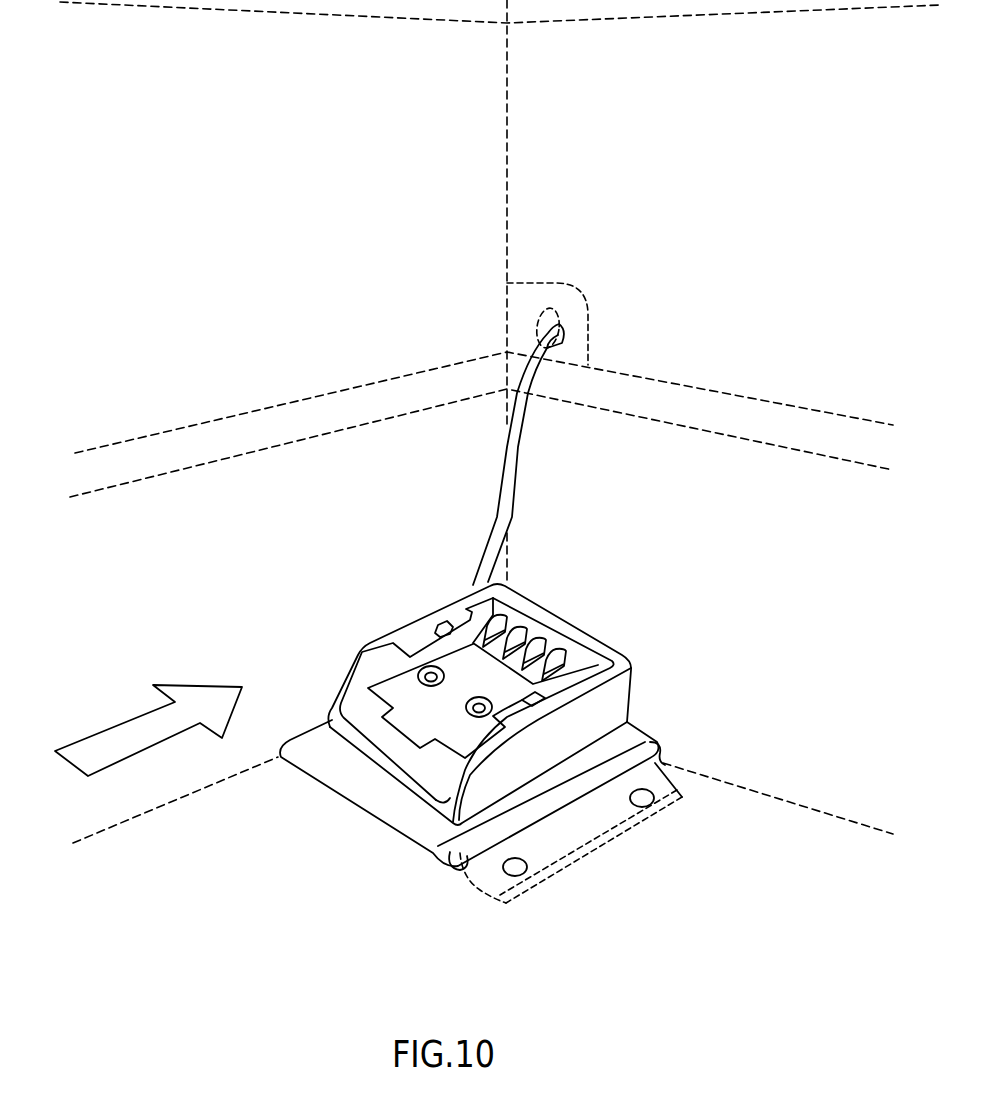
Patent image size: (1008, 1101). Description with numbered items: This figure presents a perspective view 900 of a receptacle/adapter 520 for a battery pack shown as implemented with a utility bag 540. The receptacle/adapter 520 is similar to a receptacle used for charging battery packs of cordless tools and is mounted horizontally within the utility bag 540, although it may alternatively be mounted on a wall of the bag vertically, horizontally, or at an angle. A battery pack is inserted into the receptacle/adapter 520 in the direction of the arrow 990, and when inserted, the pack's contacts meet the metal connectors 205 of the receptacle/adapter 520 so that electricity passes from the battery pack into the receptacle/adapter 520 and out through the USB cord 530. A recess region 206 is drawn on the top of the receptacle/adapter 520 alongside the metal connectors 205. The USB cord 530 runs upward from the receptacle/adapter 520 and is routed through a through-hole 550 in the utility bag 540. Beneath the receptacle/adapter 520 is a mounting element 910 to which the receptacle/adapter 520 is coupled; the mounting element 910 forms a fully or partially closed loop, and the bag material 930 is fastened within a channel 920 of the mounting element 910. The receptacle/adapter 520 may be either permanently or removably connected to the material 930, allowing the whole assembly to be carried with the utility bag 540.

The perspective view 900 is at (693, 162).
The through-hole 550 is at (552, 320).
The USB cord 530 is at (527, 390).
The utility bag 540 is at (628, 482).
The receptacle/adapter 520 is at (428, 608).
The metal connectors 205 is at (552, 648).
The latch recess 206 is at (517, 708).
The arrow 990 is at (172, 682).
The mounting element 910 is at (373, 789).
The channel 920 is at (447, 866).
The material 930 is at (575, 832).